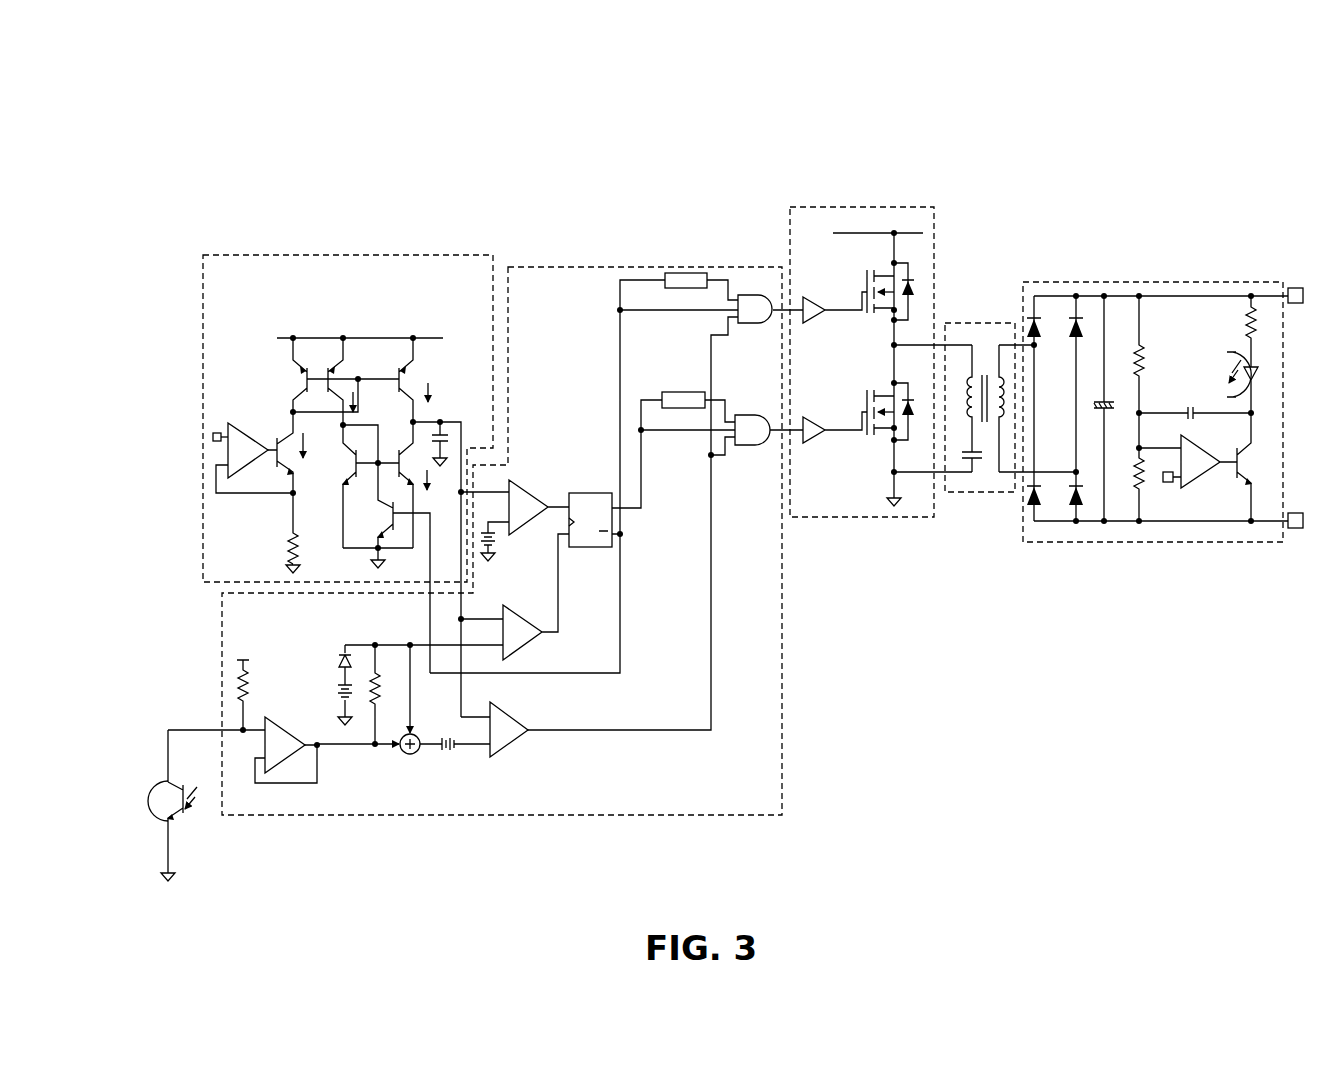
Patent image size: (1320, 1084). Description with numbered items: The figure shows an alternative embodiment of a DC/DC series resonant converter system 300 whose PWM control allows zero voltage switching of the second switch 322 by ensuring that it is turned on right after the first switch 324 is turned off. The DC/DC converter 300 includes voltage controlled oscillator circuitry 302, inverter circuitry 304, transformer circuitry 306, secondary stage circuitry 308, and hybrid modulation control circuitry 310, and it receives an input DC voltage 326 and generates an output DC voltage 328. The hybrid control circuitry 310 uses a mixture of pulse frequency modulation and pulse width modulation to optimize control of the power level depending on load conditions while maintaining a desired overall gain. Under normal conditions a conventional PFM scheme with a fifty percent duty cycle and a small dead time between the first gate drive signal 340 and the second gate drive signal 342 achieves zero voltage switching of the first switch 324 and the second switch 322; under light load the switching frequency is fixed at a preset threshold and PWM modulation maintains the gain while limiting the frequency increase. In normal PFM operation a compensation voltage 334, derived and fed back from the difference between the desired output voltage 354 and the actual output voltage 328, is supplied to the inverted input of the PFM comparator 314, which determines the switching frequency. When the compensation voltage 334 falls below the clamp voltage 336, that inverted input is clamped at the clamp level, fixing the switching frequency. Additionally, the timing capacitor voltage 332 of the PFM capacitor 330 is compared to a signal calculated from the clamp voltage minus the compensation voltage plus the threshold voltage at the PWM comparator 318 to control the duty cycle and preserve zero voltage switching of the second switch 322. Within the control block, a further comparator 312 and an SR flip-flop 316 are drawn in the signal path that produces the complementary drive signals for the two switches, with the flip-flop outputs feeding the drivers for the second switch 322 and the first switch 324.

The DC/DC series resonant converter system 300 is at (745, 85).
The voltage controlled oscillator (VCO) circuitry 302 is at (333, 252).
The inverter circuitry 304 is at (845, 207).
The transformer circuitry 306 is at (970, 322).
The secondary stage circuitry 308 is at (1152, 282).
The hybrid modulation control circuitry 310 is at (432, 820).
The comparator 312 is at (523, 482).
The PFM comparator 314 is at (518, 650).
The SR flip-flop 316 is at (584, 473).
The PWM comparator 318 is at (497, 757).
The switch Q2 322 is at (863, 260).
The switch Q1 324 is at (865, 382).
The input DC voltage (Vin) 326 is at (803, 215).
The output DC voltage (Vout) 328 is at (1243, 252).
The PFMcap 330 is at (452, 430).
The VCT 332 is at (491, 417).
The compensation voltage Vcomp 334 is at (192, 698).
The clamp voltage Vclmp 336 is at (322, 663).
The gate drive signal VGS1 340 is at (848, 461).
The gate drive signal VGS2 342 is at (848, 338).
The desired output voltage Vr 354 is at (1173, 508).